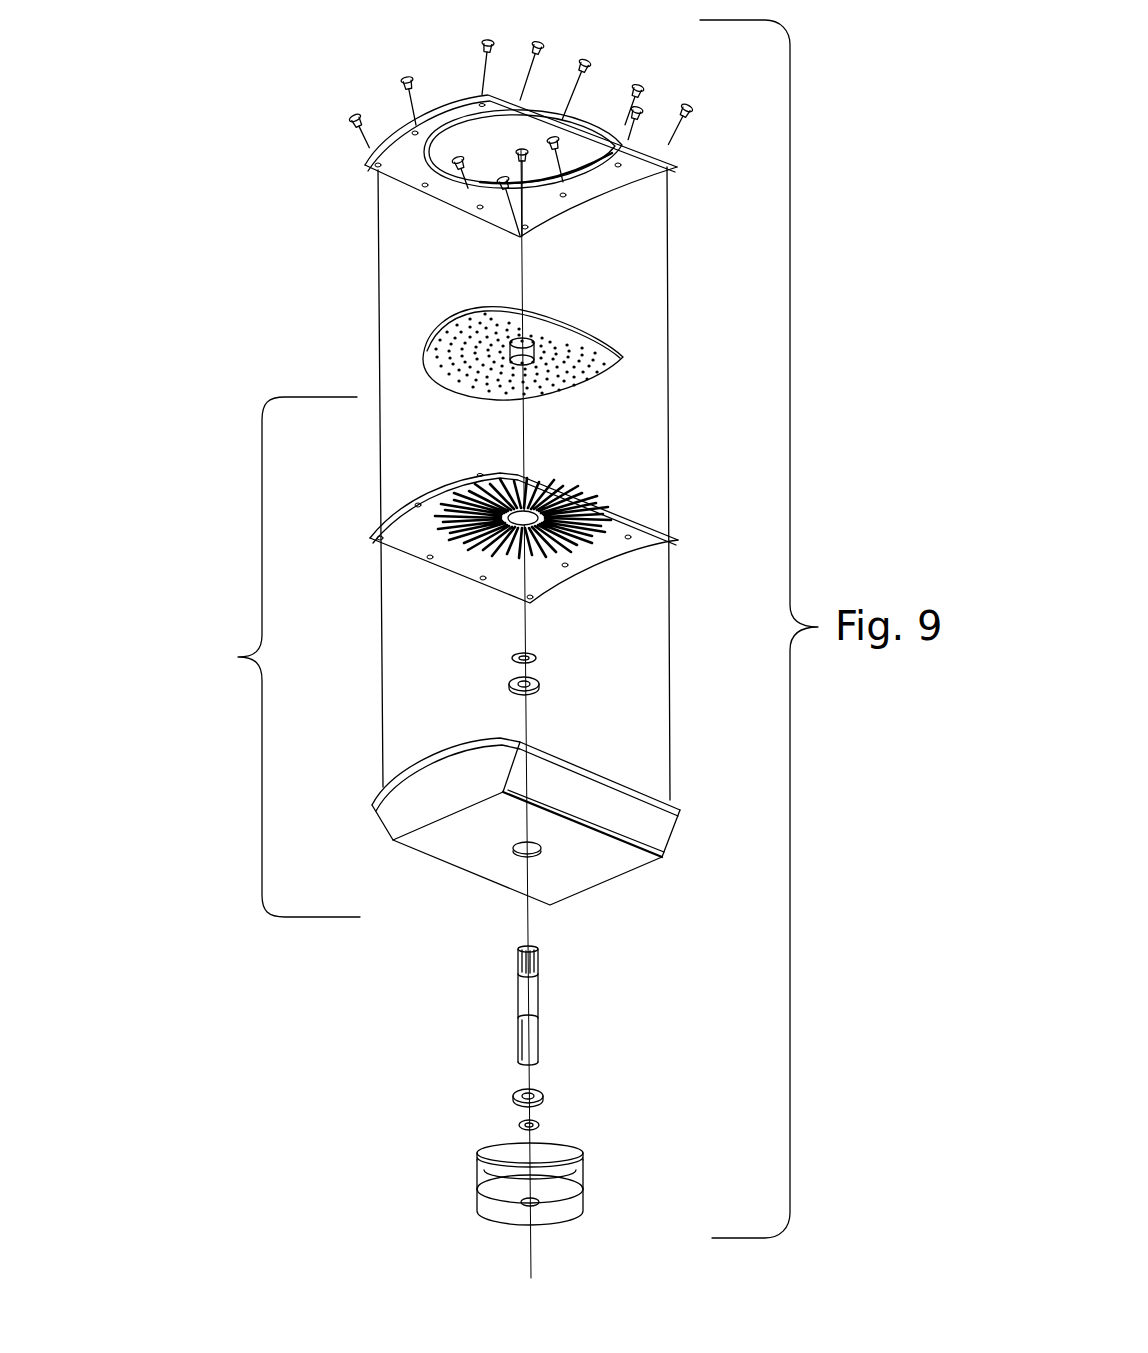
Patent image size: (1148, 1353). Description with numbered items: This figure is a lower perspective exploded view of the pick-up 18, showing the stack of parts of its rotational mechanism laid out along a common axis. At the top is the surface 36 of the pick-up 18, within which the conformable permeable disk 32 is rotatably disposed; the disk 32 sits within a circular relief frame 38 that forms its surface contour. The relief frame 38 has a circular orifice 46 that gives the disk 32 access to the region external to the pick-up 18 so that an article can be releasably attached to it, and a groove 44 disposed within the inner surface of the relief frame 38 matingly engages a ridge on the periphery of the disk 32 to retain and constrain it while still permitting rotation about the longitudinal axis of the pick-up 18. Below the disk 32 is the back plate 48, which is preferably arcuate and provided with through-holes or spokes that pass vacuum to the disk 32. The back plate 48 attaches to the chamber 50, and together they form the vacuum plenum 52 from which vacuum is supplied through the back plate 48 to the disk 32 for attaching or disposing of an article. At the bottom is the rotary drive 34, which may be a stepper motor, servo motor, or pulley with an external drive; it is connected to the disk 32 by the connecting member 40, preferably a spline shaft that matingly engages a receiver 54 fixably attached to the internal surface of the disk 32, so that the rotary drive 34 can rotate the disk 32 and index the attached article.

The pick-up 18 is at (346, 316).
The conformable permeable disk 32 is at (430, 355).
The rotary drive 34 is at (495, 1148).
The surface 36 is at (648, 143).
The relief frame 38 is at (408, 193).
The connecting member 40 is at (548, 985).
The groove 44 is at (492, 197).
The orifice 46 is at (478, 132).
The back plate 48 is at (400, 498).
The chamber 50 is at (462, 848).
The vacuum plenum 52 is at (366, 657).
The receiver 54 is at (493, 367).